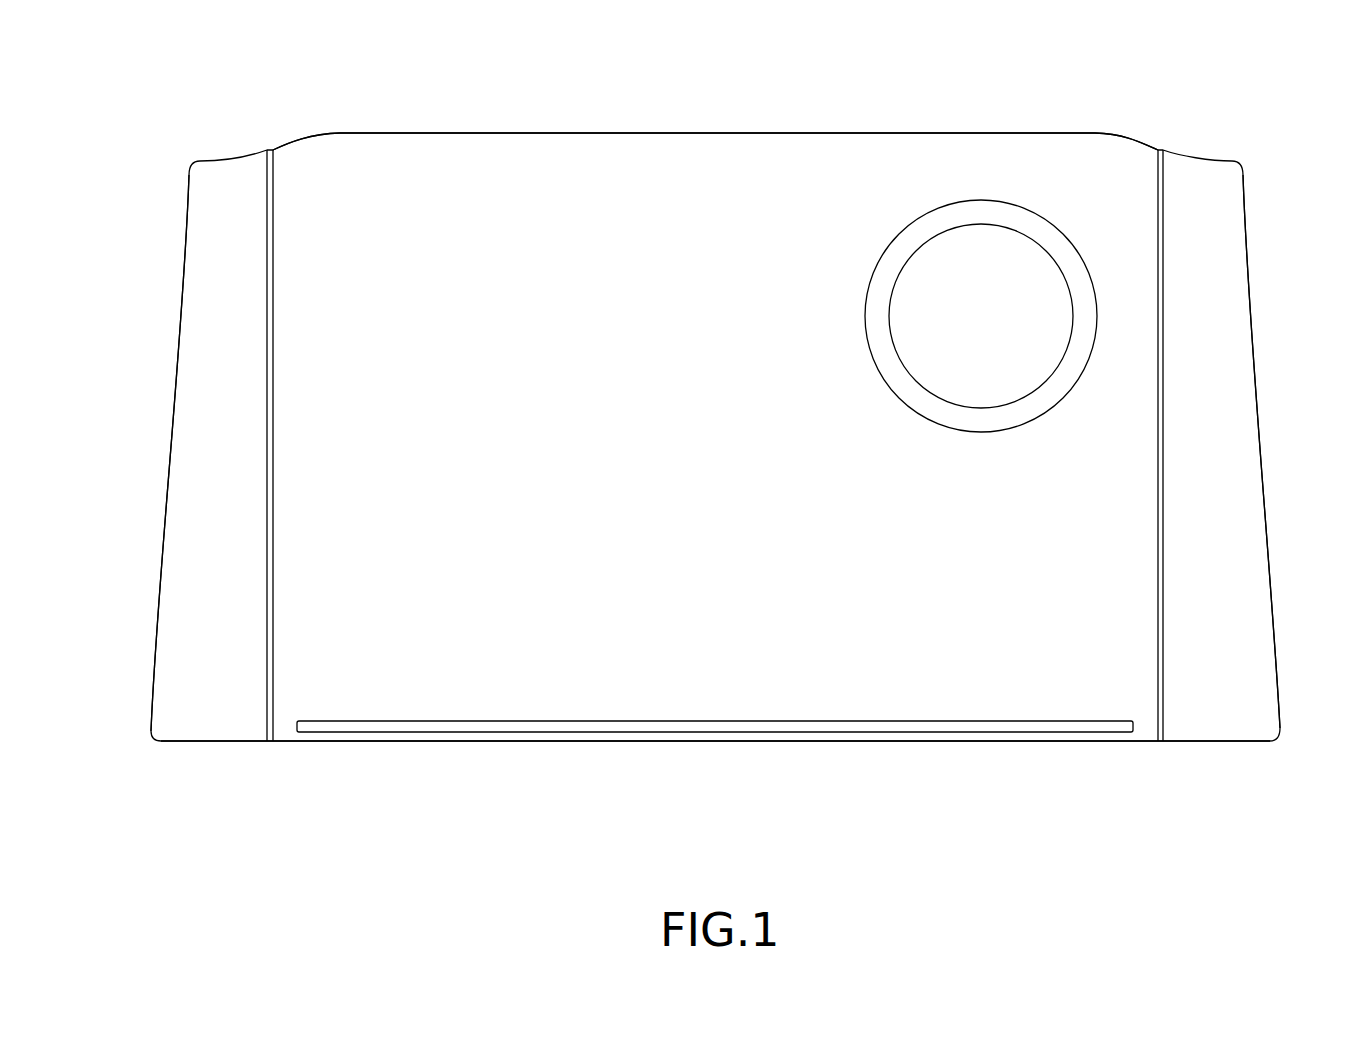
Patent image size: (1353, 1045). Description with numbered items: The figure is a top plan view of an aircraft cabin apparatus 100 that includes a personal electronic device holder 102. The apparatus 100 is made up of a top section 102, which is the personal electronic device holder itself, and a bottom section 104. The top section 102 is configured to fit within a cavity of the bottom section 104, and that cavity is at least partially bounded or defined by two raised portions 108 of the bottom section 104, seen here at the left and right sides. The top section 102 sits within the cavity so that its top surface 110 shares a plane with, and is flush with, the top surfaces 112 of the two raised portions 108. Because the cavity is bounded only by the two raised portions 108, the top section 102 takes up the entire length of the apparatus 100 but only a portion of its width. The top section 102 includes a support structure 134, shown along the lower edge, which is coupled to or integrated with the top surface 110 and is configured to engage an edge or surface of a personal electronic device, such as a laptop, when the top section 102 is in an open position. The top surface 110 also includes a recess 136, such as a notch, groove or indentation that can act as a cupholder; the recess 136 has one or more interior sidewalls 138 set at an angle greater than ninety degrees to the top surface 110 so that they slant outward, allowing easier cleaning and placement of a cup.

The aircraft cabin apparatus 100 is at (168, 72).
The top section 102 is at (810, 92).
The bottom section 104 is at (171, 774).
The raised portions 108 is at (168, 453).
The top surface 110 is at (488, 152).
The top surfaces 112 is at (215, 230).
The support structure 134 is at (713, 732).
The recess 136 is at (1032, 257).
The interior sidewalls 138 is at (975, 208).